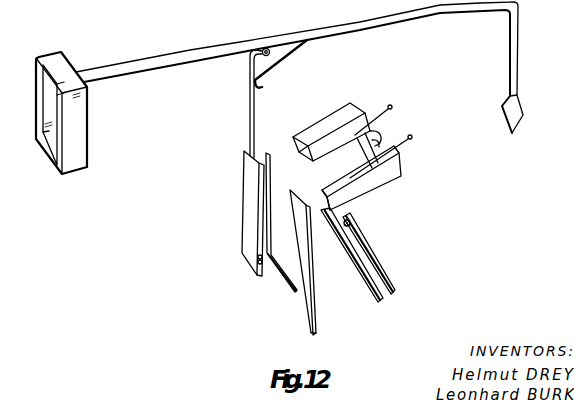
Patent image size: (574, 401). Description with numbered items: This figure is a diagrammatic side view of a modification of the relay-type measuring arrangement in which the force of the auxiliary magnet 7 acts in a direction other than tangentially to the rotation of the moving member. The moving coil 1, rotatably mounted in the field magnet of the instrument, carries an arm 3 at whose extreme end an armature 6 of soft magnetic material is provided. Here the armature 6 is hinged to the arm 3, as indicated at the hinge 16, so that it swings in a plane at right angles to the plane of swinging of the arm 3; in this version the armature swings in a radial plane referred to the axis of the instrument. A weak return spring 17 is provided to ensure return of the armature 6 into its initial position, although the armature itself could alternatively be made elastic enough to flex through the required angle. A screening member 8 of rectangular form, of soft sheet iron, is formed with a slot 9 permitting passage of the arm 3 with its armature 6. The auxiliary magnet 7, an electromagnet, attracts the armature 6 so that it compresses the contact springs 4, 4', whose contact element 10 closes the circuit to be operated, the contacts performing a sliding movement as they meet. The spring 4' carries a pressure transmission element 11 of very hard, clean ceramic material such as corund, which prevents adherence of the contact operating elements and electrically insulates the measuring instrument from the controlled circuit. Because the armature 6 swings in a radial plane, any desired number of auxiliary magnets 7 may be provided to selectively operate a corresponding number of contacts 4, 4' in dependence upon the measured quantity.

The moving coil 1 is at (79, 161).
The arm 3 is at (163, 57).
The contact spring 4 is at (373, 253).
The contact spring 4' is at (352, 255).
The armature 6 is at (249, 217).
The auxiliary magnet 7 is at (358, 122).
The screening member 8 is at (302, 318).
The slot 9 is at (284, 262).
The contact element 10 is at (352, 223).
The pressure transmission element 11 is at (260, 278).
The hinge 16 is at (267, 48).
The return spring 17 is at (270, 69).